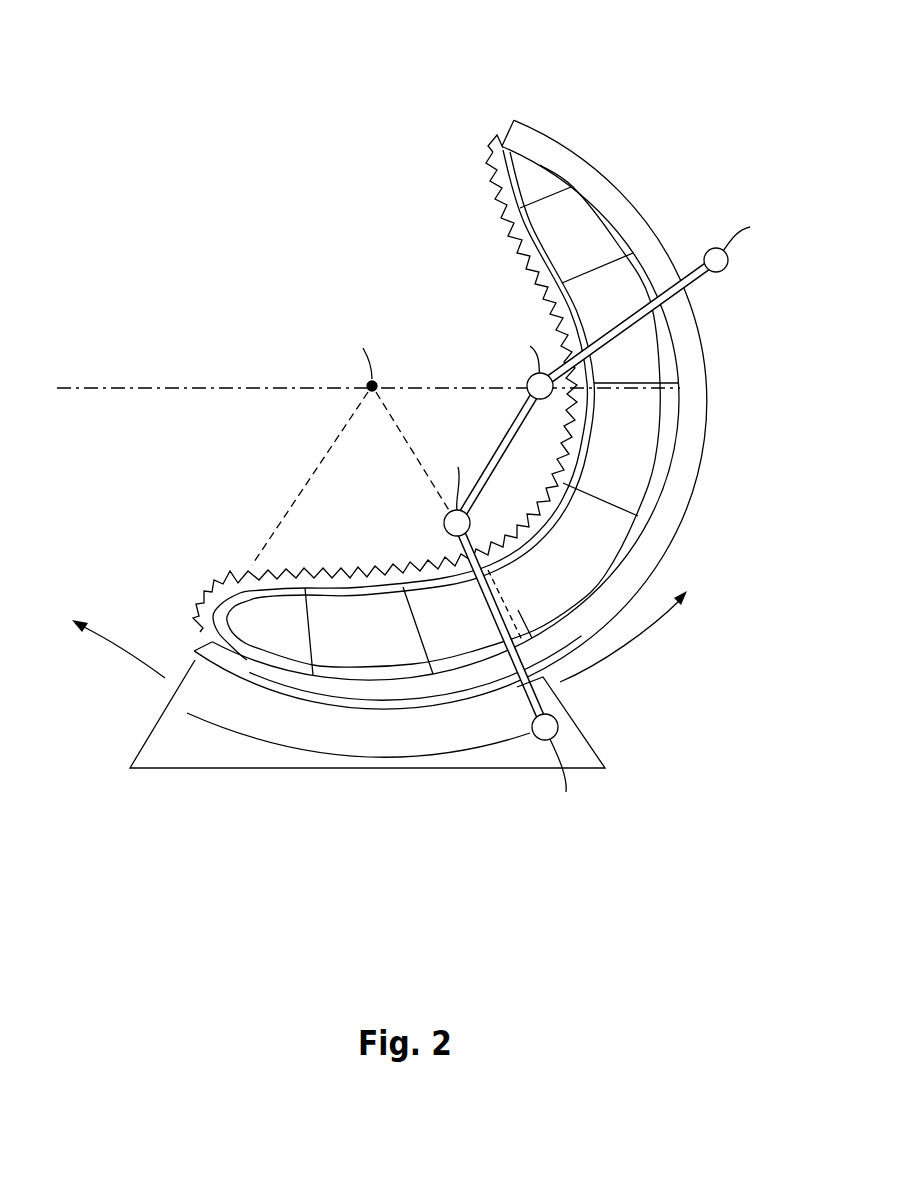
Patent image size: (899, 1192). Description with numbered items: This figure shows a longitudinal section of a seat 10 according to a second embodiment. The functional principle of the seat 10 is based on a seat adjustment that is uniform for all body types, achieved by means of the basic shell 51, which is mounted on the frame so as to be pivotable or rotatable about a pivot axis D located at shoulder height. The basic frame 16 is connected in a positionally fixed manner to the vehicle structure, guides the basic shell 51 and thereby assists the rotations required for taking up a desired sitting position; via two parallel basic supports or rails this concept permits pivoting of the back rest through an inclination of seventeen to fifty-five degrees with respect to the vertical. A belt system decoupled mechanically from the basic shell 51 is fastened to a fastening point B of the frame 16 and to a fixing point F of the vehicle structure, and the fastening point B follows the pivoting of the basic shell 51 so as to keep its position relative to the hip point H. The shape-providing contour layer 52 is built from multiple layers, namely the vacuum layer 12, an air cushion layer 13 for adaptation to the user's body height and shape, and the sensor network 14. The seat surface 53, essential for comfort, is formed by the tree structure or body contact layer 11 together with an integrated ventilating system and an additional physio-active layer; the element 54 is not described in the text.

The seat 10 is at (212, 108).
The body contact layer 11 is at (490, 150).
The vacuum layer 12 is at (487, 182).
The air cushion layer 13 is at (590, 222).
The sensor network 14 is at (418, 634).
The basic frame 16 is at (176, 742).
The basic shell 51 is at (618, 210).
The contour layer 52 is at (672, 340).
The seat surface 53 is at (497, 279).
The connecting link 54 is at (548, 703).